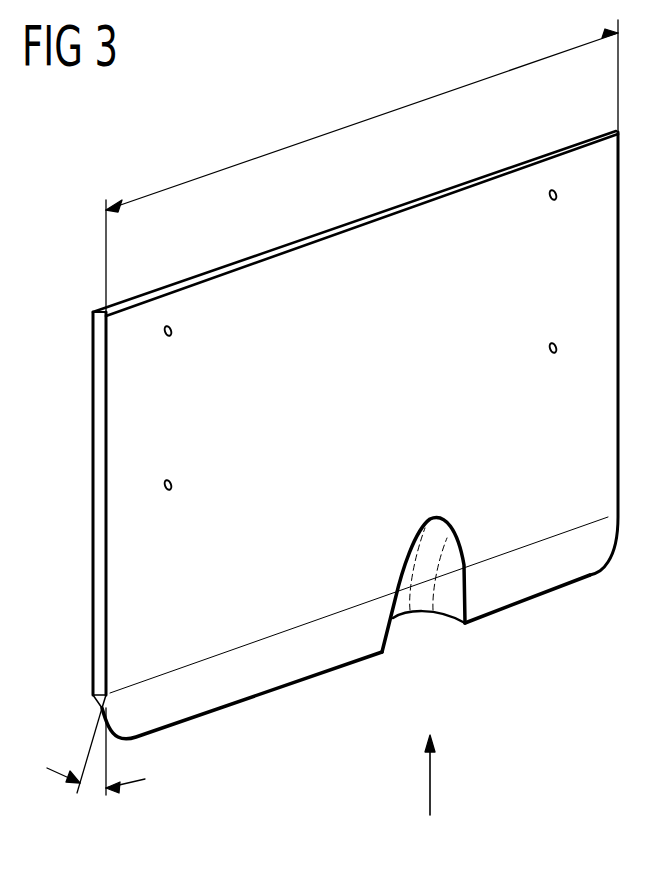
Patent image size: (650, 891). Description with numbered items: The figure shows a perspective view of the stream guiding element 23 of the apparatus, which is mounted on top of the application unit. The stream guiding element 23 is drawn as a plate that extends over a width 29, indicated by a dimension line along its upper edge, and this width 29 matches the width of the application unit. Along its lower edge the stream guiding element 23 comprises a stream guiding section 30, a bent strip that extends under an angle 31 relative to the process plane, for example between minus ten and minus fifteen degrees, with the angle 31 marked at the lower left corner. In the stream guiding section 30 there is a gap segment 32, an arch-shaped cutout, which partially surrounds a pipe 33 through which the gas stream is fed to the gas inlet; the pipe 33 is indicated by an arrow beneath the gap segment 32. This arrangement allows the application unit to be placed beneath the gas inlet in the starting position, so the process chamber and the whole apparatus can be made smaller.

The stream guiding element 23 is at (97, 444).
The width 29 is at (363, 120).
The stream guiding section 30 is at (255, 670).
The angle 31 is at (92, 790).
The gap segment 32 is at (413, 628).
The pipe 33 is at (431, 778).